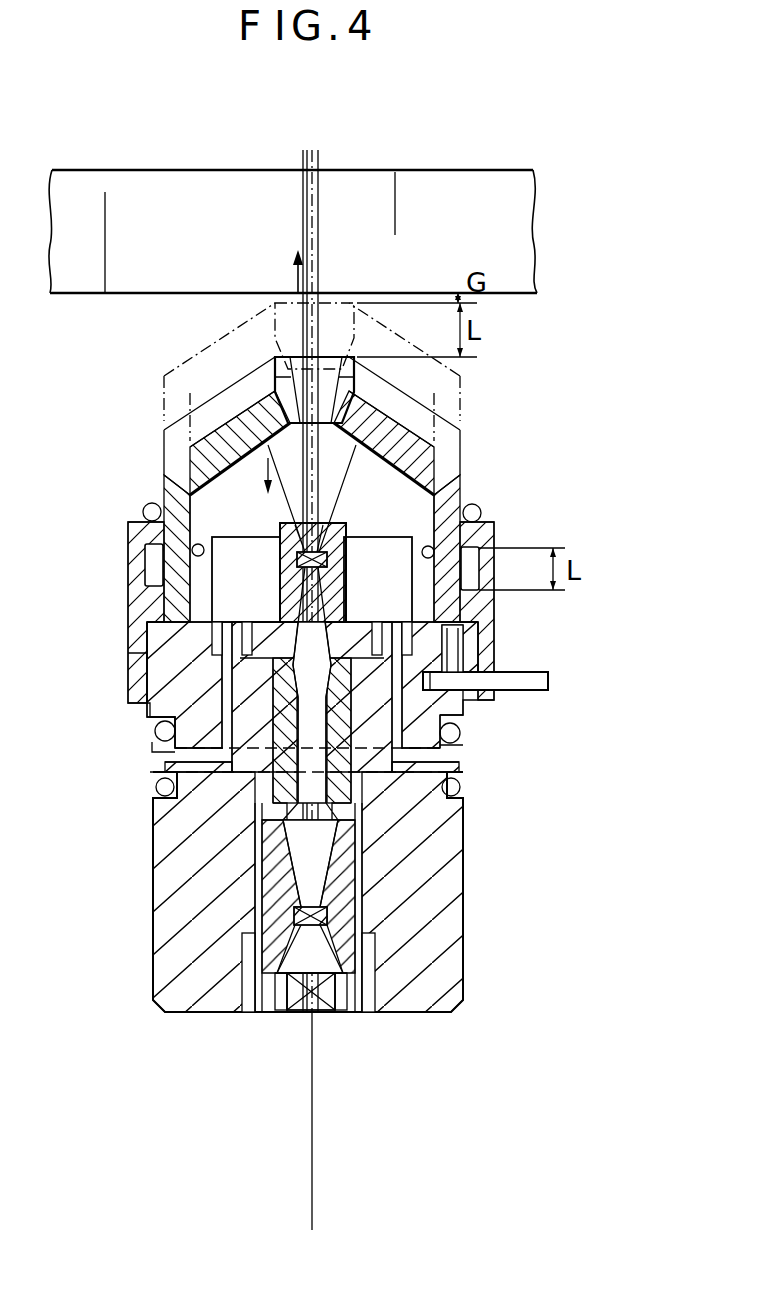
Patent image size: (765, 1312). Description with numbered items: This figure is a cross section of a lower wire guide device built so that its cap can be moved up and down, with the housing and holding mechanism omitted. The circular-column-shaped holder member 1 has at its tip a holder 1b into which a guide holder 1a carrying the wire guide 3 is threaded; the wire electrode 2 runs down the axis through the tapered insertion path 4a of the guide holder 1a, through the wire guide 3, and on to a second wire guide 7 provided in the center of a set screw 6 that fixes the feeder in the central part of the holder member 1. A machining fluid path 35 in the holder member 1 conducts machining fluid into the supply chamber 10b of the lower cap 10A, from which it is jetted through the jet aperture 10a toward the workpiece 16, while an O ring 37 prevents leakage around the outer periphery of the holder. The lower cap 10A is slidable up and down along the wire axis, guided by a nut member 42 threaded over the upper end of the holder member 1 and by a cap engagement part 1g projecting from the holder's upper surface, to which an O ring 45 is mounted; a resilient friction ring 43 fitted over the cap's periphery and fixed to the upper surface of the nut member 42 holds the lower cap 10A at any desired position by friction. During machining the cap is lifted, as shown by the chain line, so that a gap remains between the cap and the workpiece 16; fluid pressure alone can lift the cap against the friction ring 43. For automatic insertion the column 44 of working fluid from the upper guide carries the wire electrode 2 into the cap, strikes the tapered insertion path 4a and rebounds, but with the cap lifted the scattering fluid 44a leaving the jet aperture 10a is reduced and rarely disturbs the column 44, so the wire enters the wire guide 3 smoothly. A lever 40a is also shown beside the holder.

The holder member 1 is at (465, 975).
The guide holder 1a is at (338, 618).
The holder 1b is at (446, 870).
The cap engagement part 1g is at (410, 562).
The wire electrode 2 is at (318, 1116).
The wire guide 3 is at (296, 550).
The insertion path 4a is at (312, 548).
The set screw 6 is at (296, 1014).
The second wire guide 7 is at (328, 915).
The jet aperture 10a is at (296, 356).
The lower cap 10A is at (412, 452).
The supply chamber 10b is at (242, 470).
The workpiece 16 is at (524, 242).
The machining fluid path 35 is at (456, 720).
The O ring 37 is at (462, 792).
The lever 40a is at (550, 684).
The nut member 42 is at (130, 532).
The resilient friction ring 43 is at (480, 512).
The column 44 is at (322, 203).
The scattering fluid 44a is at (294, 262).
The O ring 45 is at (204, 556).